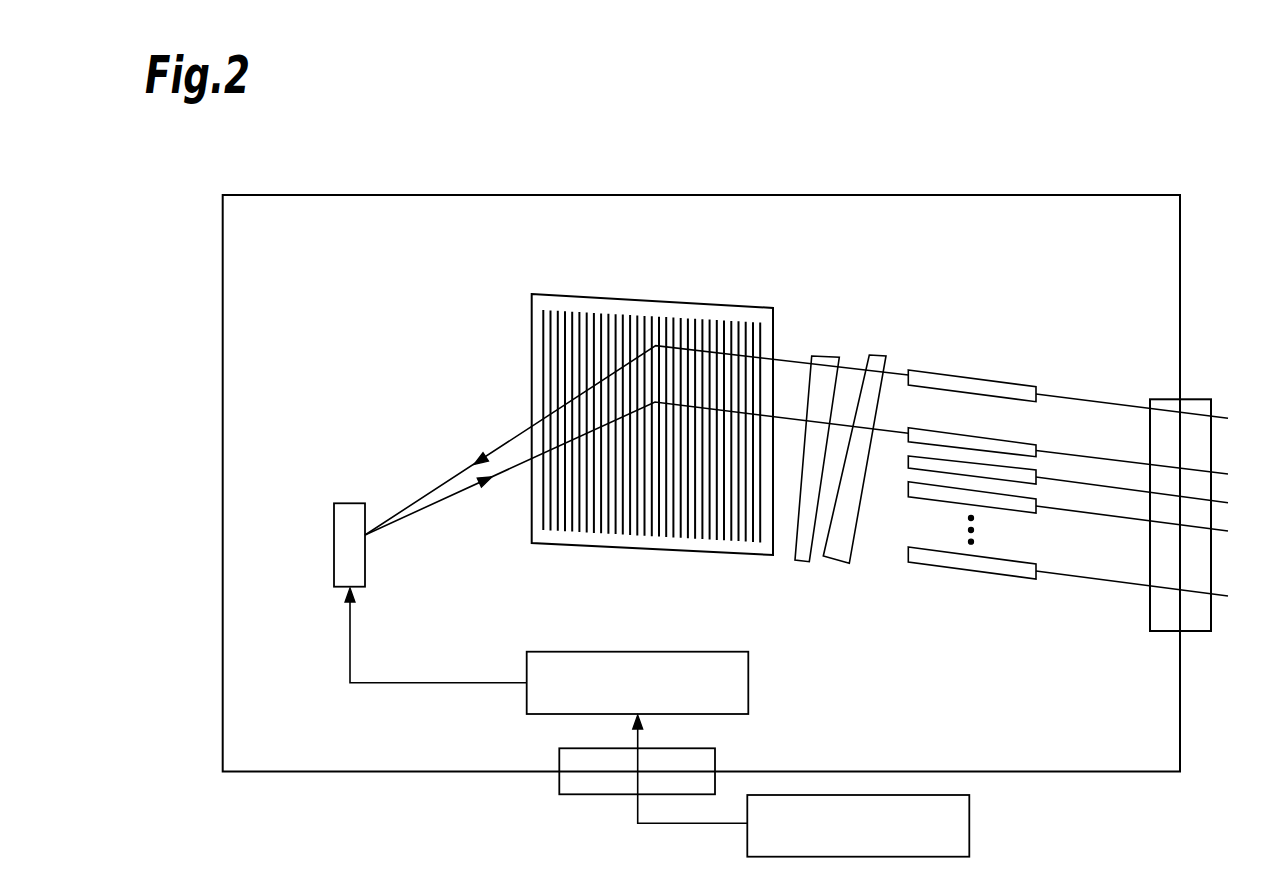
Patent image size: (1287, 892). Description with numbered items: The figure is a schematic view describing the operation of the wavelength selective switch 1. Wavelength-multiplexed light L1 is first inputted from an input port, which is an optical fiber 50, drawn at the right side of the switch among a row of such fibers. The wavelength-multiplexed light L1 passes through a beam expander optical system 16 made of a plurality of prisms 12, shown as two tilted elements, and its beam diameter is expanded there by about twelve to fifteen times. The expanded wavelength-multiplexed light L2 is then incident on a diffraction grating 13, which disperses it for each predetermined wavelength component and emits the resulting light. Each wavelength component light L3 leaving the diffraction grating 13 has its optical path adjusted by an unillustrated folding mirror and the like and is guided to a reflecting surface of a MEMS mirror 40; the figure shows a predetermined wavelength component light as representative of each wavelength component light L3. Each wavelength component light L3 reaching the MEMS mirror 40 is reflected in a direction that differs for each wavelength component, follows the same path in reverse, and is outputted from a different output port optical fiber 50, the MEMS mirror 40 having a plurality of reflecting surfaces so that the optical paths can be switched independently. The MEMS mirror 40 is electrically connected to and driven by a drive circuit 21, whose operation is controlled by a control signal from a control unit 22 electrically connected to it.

The wavelength selective switch 1 is at (1163, 102).
The prism 12 is at (870, 606).
The diffraction grating 13 is at (682, 302).
The beam expander optical system 16 is at (831, 504).
The drive circuit 21 is at (748, 683).
The control unit 22 is at (969, 826).
The MEMS mirror 40 is at (352, 502).
The optical fiber 50 is at (968, 376).
The wavelength-multiplexed light L1 is at (893, 372).
The wavelength-multiplexed light L2 is at (787, 362).
The wavelength component light L3 is at (457, 473).